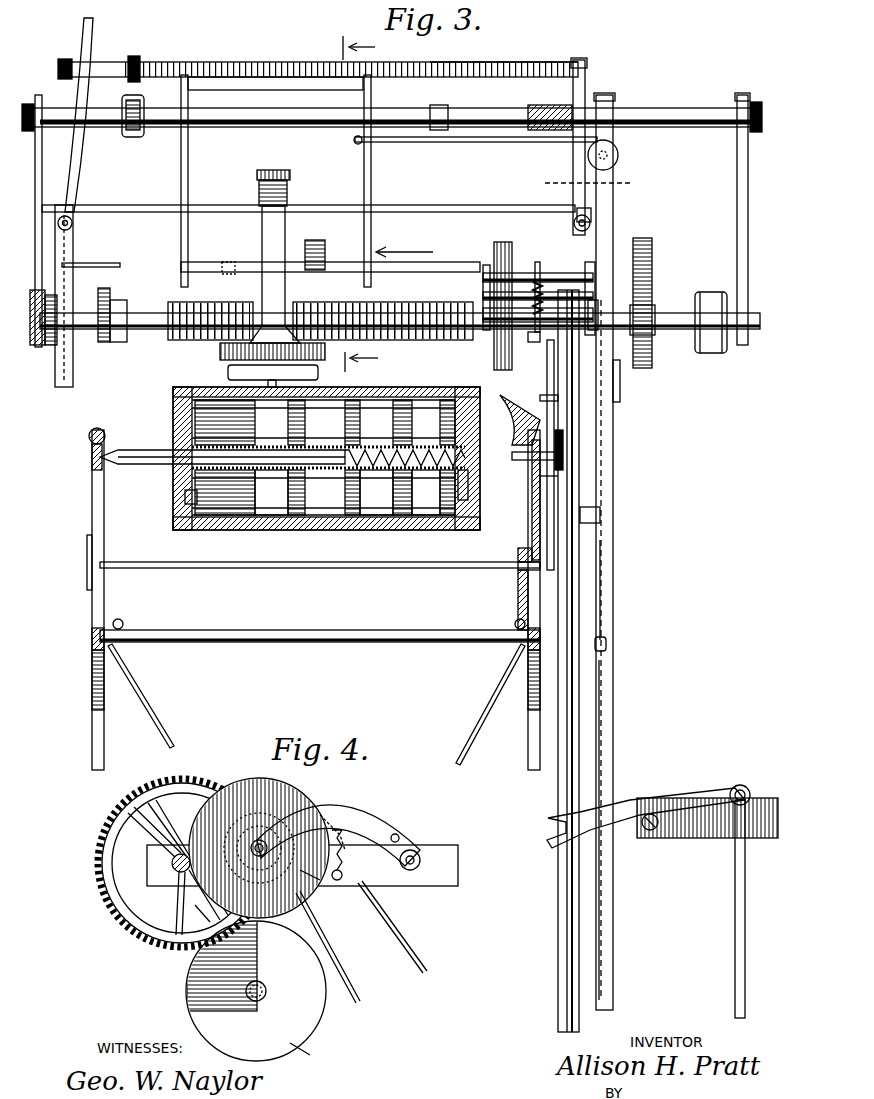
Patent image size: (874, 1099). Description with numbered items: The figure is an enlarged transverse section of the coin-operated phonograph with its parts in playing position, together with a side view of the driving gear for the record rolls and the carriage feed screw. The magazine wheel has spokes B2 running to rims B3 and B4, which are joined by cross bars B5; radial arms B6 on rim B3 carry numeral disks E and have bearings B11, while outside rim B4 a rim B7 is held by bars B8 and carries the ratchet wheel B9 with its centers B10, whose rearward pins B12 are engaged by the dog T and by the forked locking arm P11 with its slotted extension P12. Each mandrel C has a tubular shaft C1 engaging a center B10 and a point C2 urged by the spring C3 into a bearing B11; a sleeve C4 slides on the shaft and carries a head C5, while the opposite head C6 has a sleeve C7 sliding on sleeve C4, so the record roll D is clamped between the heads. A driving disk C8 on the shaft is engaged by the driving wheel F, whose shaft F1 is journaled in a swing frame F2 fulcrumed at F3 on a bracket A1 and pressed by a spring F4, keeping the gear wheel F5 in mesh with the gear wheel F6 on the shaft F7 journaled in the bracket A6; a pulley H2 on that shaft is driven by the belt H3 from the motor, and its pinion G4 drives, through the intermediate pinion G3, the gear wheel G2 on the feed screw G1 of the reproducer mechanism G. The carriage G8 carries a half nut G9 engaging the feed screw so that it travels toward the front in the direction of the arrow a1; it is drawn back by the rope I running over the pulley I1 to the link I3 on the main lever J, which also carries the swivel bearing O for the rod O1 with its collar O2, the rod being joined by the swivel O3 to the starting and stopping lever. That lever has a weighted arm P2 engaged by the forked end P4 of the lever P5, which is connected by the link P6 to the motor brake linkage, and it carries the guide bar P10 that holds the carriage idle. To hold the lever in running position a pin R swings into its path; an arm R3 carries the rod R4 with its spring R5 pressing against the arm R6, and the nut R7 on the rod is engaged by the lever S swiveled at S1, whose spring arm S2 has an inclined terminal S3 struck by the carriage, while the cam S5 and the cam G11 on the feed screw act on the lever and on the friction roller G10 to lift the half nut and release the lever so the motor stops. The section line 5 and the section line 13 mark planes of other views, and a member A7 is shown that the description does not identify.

In FIG. 3, the rod R4 is at (300, 61).
In FIG. 3, the spring R5 is at (458, 61).
In FIG. 3, the section line 5 is at (350, 47).
In FIG. 3, the nut R7 is at (58, 68).
In FIG. 3, the arm R6 is at (136, 56).
In FIG. 3, the lever S is at (80, 158).
In FIG. 3, the bracket A6 is at (35, 182).
In FIG. 4, the bracket A6 is at (443, 875).
In FIG. 3, the main rod A7 is at (506, 110).
In FIG. 3, the rope I is at (480, 143).
In FIG. 3, the pulley I1 is at (618, 155).
In FIG. 3, the arm R3 is at (585, 76).
In FIG. 3, the guide bar P10 is at (463, 205).
In FIG. 3, the section line 13 is at (596, 174).
In FIG. 3, the pin R is at (574, 224).
In FIG. 3, the arrow a1 is at (404, 243).
In FIG. 3, the carriage G8 is at (262, 250).
In FIG. 3, the friction roller G10 is at (233, 255).
In FIG. 3, the half nut or point G9 is at (325, 262).
In FIG. 3, the reproducer mechanism G is at (259, 355).
In FIG. 3, the intermediate pinion G3 is at (303, 369).
In FIG. 4, the intermediate pinion G3 is at (224, 905).
In FIG. 3, the feed screw G1 is at (408, 300).
In FIG. 4, the feed screw G1 is at (172, 862).
In FIG. 3, the shaft F7 is at (678, 330).
In FIG. 4, the shaft F7 is at (330, 880).
In FIG. 3, the cam G11 is at (112, 298).
In FIG. 3, the spring arm S2 is at (73, 373).
In FIG. 3, the swivel S1 is at (72, 226).
In FIG. 3, the inclined terminal S3 is at (104, 257).
In FIG. 3, the cam S5 is at (52, 350).
In FIG. 3, the driving wheel F is at (496, 250).
In FIG. 4, the driving wheel F is at (264, 800).
In FIG. 3, the swing frame F2 is at (528, 272).
In FIG. 4, the swing frame F2 is at (336, 806).
In FIG. 3, the spring F4 is at (538, 340).
In FIG. 4, the spring F4 is at (358, 862).
In FIG. 3, the swivel O3 is at (603, 307).
In FIG. 3, the gear wheel G2 is at (652, 264).
In FIG. 4, the gear wheel G2 is at (100, 876).
In FIG. 3, the pinion G4 is at (655, 305).
In FIG. 4, the pinion G4 is at (262, 935).
In FIG. 3, the pulley H2 is at (716, 292).
In FIG. 4, the pulley H2 is at (365, 815).
In FIG. 3, the link I3 is at (620, 402).
In FIG. 3, the arm P2 is at (579, 765).
In FIG. 3, the main lever J is at (558, 933).
In FIG. 3, the centers B10 is at (532, 480).
In FIG. 3, the locking arm P11 is at (558, 396).
In FIG. 3, the ratchet wheel B9 is at (537, 450).
In FIG. 3, the extension P12 is at (579, 440).
In FIG. 3, the pins B12 is at (562, 456).
In FIG. 3, the dog T is at (558, 476).
In FIG. 3, the swivel bearing O is at (600, 507).
In FIG. 3, the rod O1 is at (604, 580).
In FIG. 3, the head or collar O2 is at (606, 643).
In FIG. 3, the bracket A1 is at (613, 695).
In FIG. 3, the mandrel C is at (173, 400).
In FIG. 3, the point C2 is at (148, 450).
In FIG. 3, the head C6 is at (470, 388).
In FIG. 3, the sleeve C4 is at (271, 492).
In FIG. 3, the spring C3 is at (376, 492).
In FIG. 3, the sleeve C7 is at (426, 492).
In FIG. 3, the head C5 is at (178, 510).
In FIG. 3, the tubular shaft C1 is at (480, 490).
In FIG. 3, the record roll D is at (330, 530).
In FIG. 3, the driving disk C8 is at (518, 552).
In FIG. 4, the driving disk C8 is at (310, 1055).
In FIG. 3, the rim B7 is at (518, 570).
In FIG. 3, the bars B8 is at (528, 606).
In FIG. 3, the bearings B11 is at (92, 457).
In FIG. 3, the arms B6 is at (92, 513).
In FIG. 3, the rim B3 is at (92, 744).
In FIG. 3, the numeral disks E is at (87, 577).
In FIG. 3, the cross bars B5 is at (343, 642).
In FIG. 3, the spokes B2 is at (170, 745).
In FIG. 3, the rim B4 is at (528, 744).
In FIG. 3, the forked end P4 is at (548, 830).
In FIG. 3, the lever P5 is at (668, 838).
In FIG. 3, the link P6 is at (745, 948).
In FIG. 4, the gear wheel F5 is at (255, 800).
In FIG. 4, the shaft F1 is at (302, 818).
In FIG. 4, the fulcrum F3 is at (420, 852).
In FIG. 4, the gear wheel F6 is at (318, 890).
In FIG. 4, the belt H3 is at (408, 955).